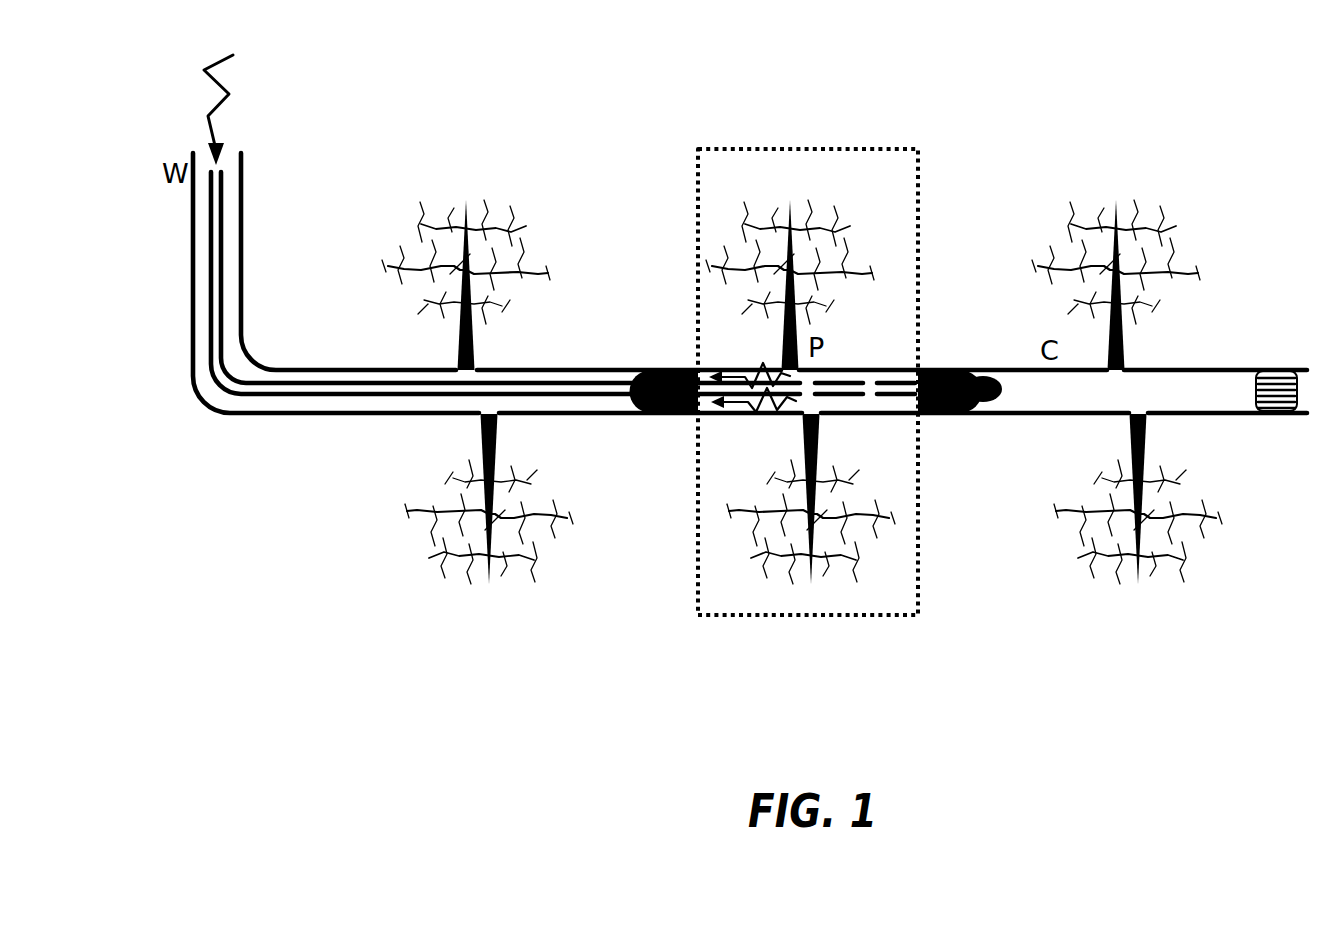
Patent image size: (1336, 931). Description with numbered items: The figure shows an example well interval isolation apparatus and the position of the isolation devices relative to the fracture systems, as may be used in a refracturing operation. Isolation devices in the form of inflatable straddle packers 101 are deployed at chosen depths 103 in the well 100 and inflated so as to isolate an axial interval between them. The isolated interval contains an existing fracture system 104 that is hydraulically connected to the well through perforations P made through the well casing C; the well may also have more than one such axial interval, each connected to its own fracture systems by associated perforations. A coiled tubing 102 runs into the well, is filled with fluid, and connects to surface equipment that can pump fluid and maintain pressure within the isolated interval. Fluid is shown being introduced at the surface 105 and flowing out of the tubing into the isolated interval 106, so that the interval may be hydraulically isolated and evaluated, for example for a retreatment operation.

The well 100 is at (750, 283).
The inflatable straddle packers 101 is at (816, 369).
The coiled tubing 102 is at (353, 397).
The chosen depths 103 is at (795, 401).
The fracture system 104 is at (828, 217).
The injected fluid 105 is at (250, 102).
The fluid flow from perforations 106 is at (752, 373).